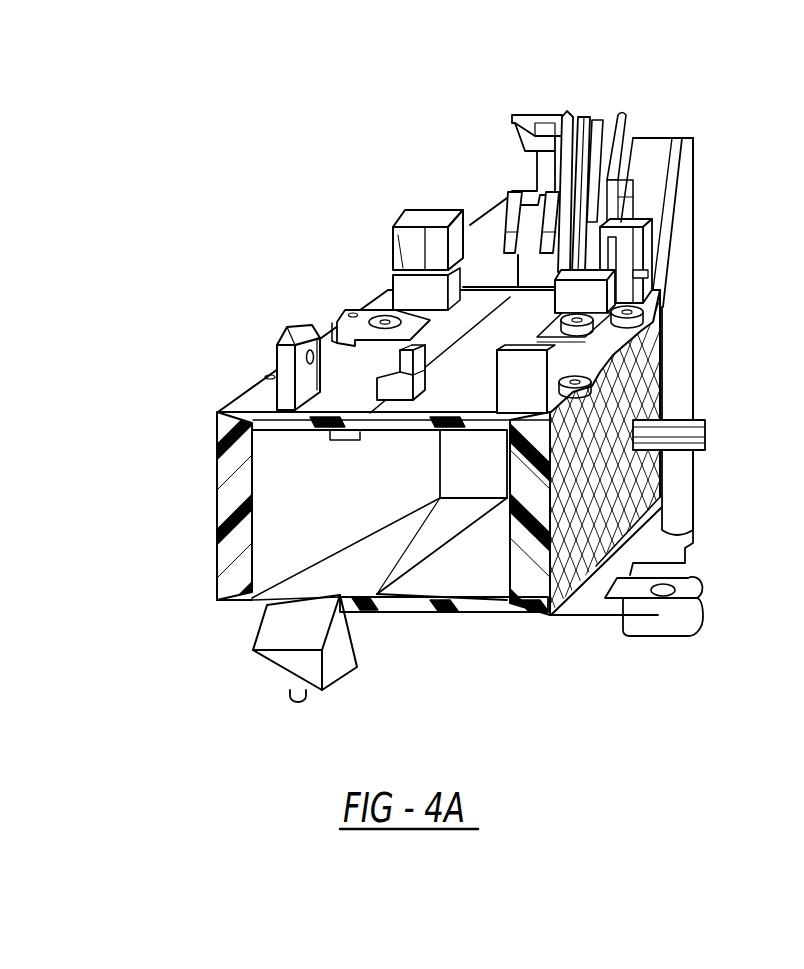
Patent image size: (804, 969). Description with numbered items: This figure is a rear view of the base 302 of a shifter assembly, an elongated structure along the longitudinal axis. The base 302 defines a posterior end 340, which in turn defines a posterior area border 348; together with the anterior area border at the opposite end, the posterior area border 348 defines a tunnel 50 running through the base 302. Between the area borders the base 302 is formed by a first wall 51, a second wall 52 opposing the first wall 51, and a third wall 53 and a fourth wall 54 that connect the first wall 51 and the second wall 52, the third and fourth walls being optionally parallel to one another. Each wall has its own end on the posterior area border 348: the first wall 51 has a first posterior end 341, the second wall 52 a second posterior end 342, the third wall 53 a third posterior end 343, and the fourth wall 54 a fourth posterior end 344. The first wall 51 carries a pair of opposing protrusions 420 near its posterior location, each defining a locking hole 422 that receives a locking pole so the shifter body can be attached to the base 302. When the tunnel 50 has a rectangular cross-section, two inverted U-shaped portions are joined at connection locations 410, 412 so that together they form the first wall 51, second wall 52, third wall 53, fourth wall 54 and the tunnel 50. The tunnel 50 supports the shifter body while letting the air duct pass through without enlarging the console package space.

The tunnel 50 is at (316, 524).
The first wall 51 is at (268, 448).
The second wall 52 is at (606, 483).
The third wall 53 is at (505, 300).
The fourth wall 54 is at (474, 554).
The base 302 is at (463, 648).
The posterior end 340 is at (314, 578).
The first posterior end 341 is at (234, 496).
The second posterior end 342 is at (546, 548).
The third posterior end 343 is at (423, 422).
The fourth posterior end 344 is at (378, 609).
The posterior area border 348 is at (522, 617).
The connection location 410 is at (418, 562).
The connection location 412 is at (460, 333).
The protrusion 420 is at (277, 357).
The locking hole 422 is at (309, 364).